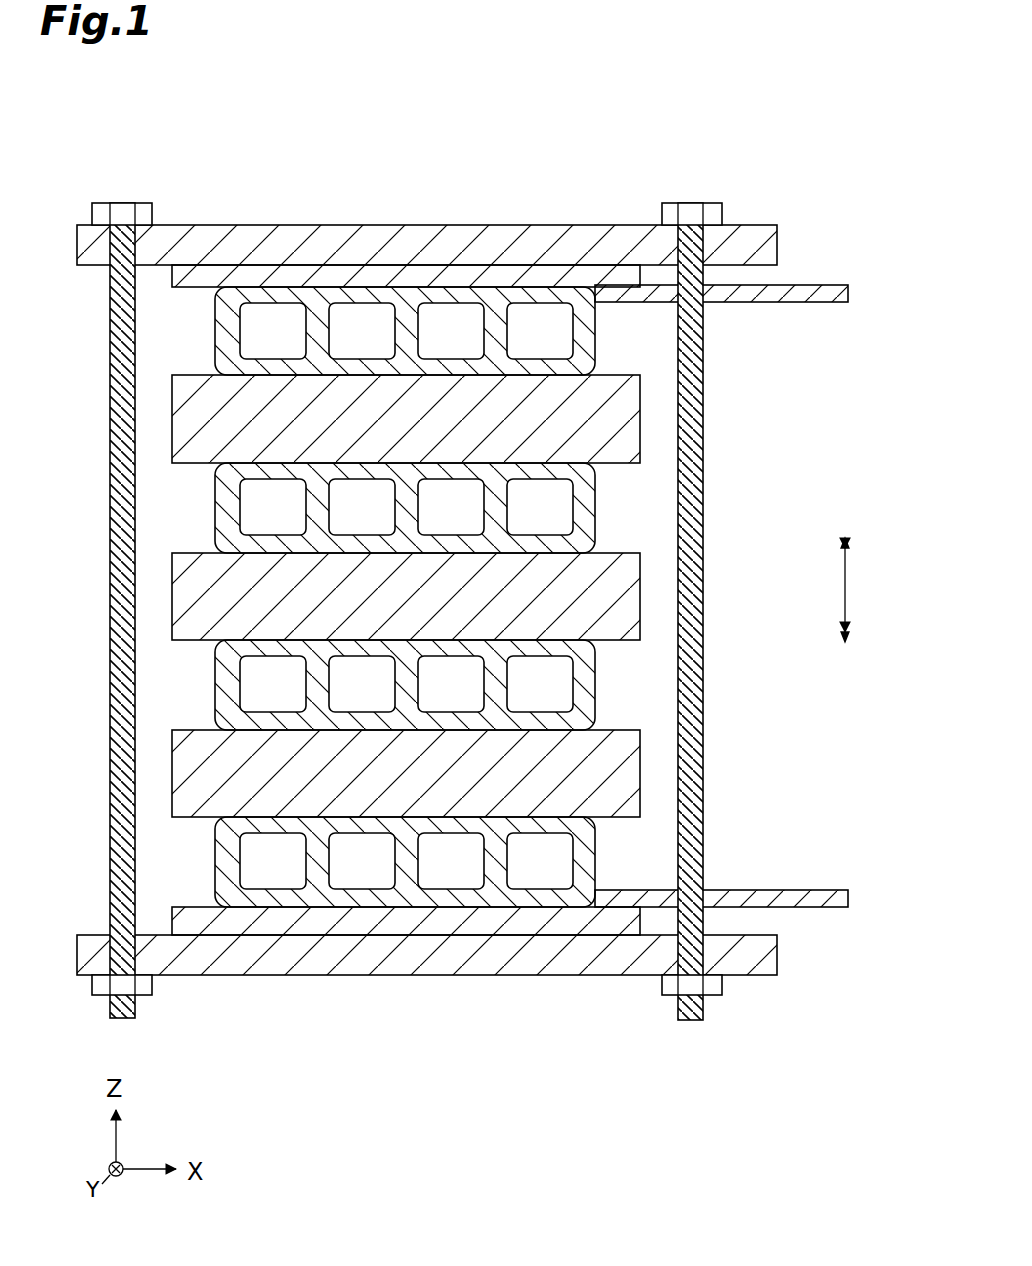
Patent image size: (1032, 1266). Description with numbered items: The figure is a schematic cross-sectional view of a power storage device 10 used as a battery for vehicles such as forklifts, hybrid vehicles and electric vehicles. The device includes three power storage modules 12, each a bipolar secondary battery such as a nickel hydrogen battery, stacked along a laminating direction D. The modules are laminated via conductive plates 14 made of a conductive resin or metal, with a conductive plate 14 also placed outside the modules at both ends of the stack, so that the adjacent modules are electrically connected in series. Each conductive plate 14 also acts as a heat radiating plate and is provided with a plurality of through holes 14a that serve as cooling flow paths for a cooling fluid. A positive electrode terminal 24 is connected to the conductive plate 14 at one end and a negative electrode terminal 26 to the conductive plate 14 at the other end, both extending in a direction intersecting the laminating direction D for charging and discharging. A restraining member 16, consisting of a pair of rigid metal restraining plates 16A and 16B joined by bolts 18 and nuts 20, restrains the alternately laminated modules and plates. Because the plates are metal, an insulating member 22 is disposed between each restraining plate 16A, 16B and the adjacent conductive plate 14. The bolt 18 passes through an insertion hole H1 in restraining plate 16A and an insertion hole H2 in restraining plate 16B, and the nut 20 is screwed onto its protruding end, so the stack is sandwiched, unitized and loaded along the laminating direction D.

The power storage device 10 is at (706, 152).
The power storage module 12 is at (620, 415).
The conductive plate 14 is at (494, 658).
The through hole 14a is at (517, 860).
The restraining member 16 is at (427, 561).
The restraining plate 16A is at (297, 247).
The restraining plate 16B is at (298, 962).
The bolt 18 is at (110, 375).
The nut 20 is at (152, 985).
The insulating member 22 is at (508, 278).
The positive electrode terminal 24 is at (850, 898).
The negative electrode terminal 26 is at (850, 293).
The insertion hole H1 is at (118, 237).
The insertion hole H2 is at (112, 962).
The laminating direction D is at (854, 590).